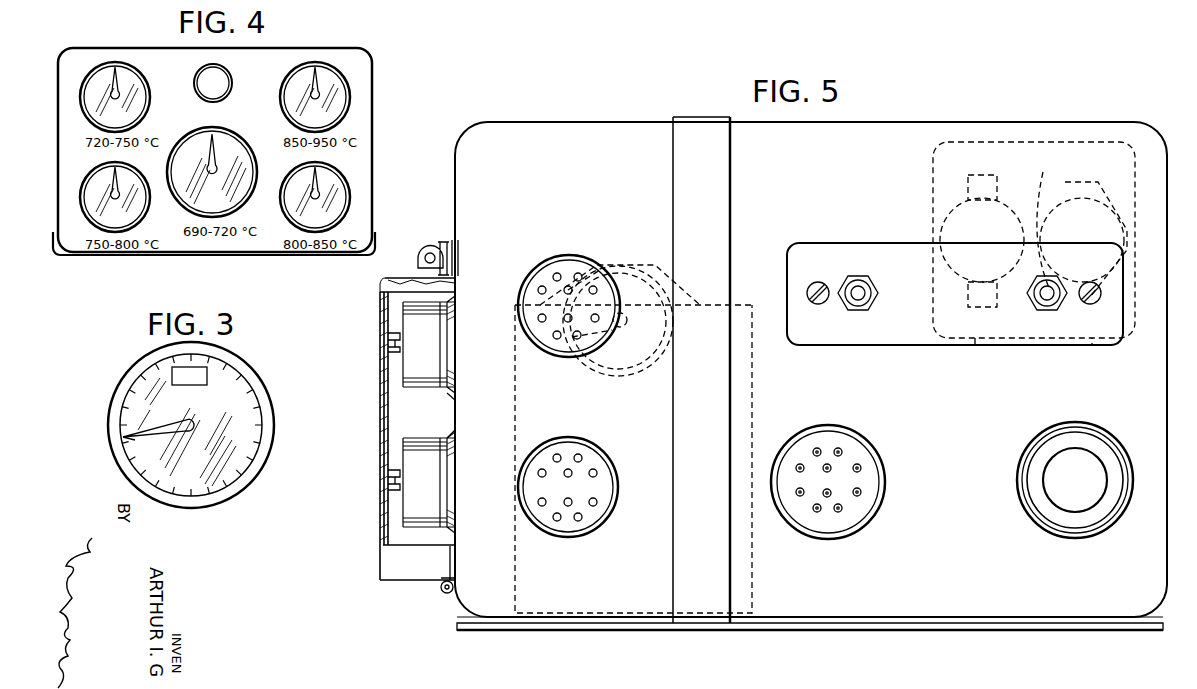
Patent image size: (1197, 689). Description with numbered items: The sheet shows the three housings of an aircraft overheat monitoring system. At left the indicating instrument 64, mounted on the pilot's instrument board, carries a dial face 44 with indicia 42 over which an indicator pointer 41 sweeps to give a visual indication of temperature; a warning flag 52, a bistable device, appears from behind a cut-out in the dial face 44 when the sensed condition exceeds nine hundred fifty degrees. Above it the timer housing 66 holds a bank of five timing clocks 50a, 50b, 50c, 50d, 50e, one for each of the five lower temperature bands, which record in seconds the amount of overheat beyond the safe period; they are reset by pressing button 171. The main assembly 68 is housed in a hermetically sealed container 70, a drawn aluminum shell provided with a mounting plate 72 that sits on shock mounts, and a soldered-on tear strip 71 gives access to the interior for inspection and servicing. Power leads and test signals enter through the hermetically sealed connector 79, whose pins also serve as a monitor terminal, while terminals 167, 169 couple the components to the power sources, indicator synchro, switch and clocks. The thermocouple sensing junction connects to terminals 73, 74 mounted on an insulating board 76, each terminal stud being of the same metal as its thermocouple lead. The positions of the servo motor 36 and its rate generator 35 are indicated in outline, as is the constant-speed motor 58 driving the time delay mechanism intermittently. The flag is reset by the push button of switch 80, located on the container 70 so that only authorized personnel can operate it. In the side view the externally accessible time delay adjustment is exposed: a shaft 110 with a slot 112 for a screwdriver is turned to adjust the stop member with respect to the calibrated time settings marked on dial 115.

In FIG. 5, the rate generator 35 is at (962, 200).
In FIG. 5, the servo motor 36 is at (1082, 223).
In FIG. 3, the indicator pointer 41 is at (143, 443).
In FIG. 3, the indicia 42 is at (128, 410).
In FIG. 3, the dial face 44 is at (227, 400).
In FIG. 4, the timing clock 50a is at (228, 140).
In FIG. 4, the timing clock 50b is at (130, 78).
In FIG. 4, the timing clock 50c is at (88, 220).
In FIG. 4, the timing clock 50d is at (340, 183).
In FIG. 4, the timing clock 50e is at (330, 73).
In FIG. 3, the warning flag 52 is at (200, 372).
In FIG. 5, the constant-speed motor 58 is at (597, 373).
In FIG. 3, the indicating instrument 64 is at (115, 390).
In FIG. 4, the timer housing 66 is at (374, 77).
In FIG. 5, the main assembly 68 is at (1014, 119).
In FIG. 5, the hermetically sealed container 70 is at (637, 607).
In FIG. 5, the tear strip 71 is at (685, 560).
In FIG. 5, the mounting plate 72 is at (908, 626).
In FIG. 5, the terminal 73 is at (858, 305).
In FIG. 5, the terminal 74 is at (1047, 305).
In FIG. 5, the insulating board 76 is at (906, 328).
In FIG. 5, the connector 79 is at (536, 274).
In FIG. 5, the reset switch 80 is at (1050, 480).
In FIG. 5, the shaft 110 is at (397, 354).
In FIG. 5, the slot 112 is at (388, 343).
In FIG. 5, the dial 115 is at (452, 398).
In FIG. 5, the terminal 167 is at (547, 528).
In FIG. 5, the terminal 169 is at (843, 532).
In FIG. 4, the reset button 171 is at (226, 71).